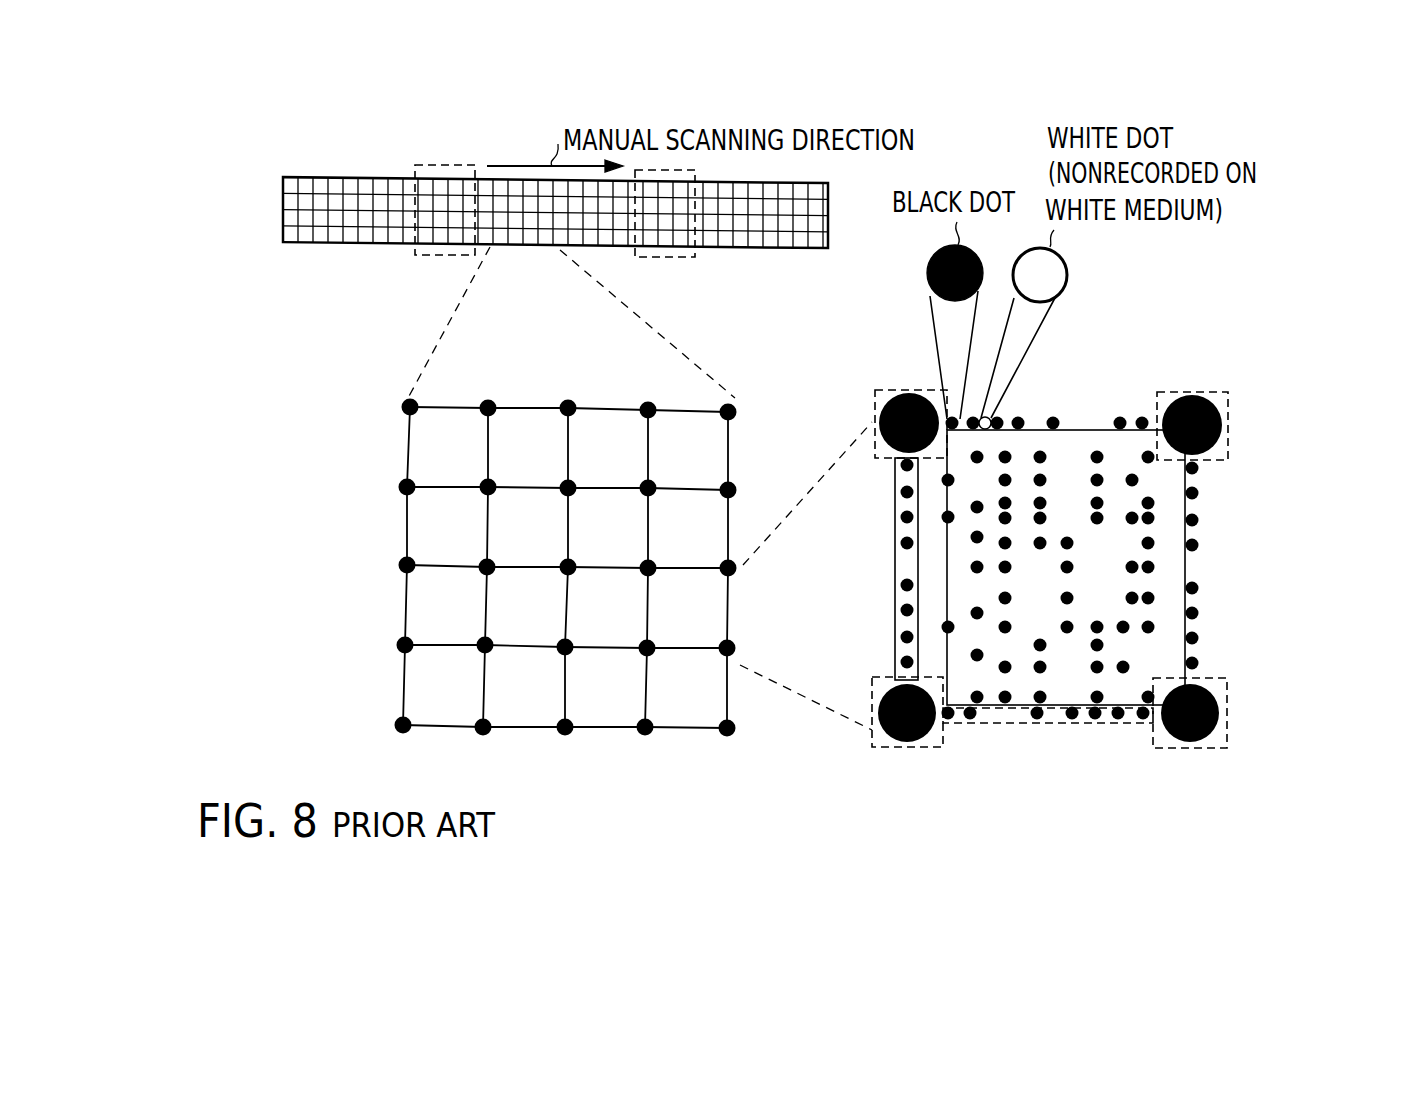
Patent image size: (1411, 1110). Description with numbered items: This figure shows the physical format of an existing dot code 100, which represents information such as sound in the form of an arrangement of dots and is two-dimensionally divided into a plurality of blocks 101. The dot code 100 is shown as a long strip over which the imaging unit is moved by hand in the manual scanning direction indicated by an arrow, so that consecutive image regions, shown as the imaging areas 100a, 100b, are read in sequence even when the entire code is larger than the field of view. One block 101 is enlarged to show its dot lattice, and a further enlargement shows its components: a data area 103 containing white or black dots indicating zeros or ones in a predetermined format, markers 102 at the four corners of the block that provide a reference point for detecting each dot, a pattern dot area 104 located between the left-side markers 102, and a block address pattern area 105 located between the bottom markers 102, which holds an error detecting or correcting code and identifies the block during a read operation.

The dot code 100 is at (532, 227).
The imaging area 100a is at (415, 165).
The imaging area 100b is at (688, 257).
The block 101 is at (407, 441).
The marker 102 is at (882, 392).
The data area 103 is at (1078, 430).
The pattern dot area 104 is at (897, 592).
The block address pattern area 105 is at (1050, 725).